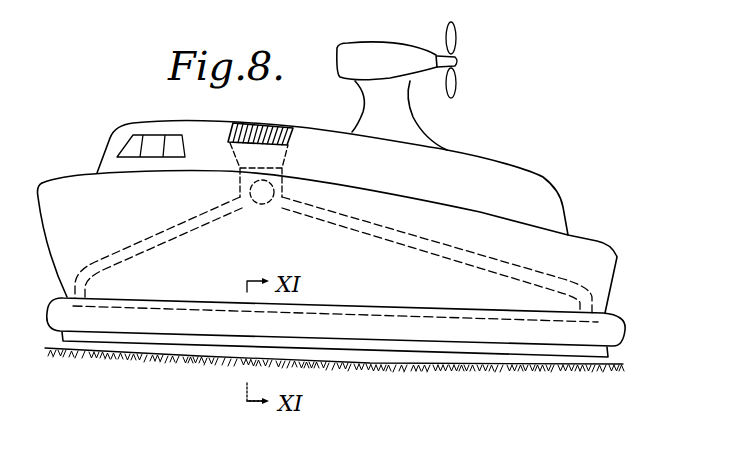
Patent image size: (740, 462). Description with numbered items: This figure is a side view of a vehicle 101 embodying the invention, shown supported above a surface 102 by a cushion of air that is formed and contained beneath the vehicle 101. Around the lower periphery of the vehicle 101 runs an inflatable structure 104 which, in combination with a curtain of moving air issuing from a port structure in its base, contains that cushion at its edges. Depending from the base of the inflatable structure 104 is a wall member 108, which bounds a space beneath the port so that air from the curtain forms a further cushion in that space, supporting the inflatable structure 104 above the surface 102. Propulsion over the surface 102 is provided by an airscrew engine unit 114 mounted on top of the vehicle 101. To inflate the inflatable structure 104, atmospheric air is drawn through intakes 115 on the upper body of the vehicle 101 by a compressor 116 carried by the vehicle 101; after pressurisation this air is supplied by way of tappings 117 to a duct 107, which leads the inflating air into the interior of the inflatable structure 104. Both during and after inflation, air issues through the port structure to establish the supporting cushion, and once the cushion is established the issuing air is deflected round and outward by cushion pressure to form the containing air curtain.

The vehicle 101 is at (575, 211).
The surface 102 is at (97, 352).
The inflatable structure 104 is at (598, 338).
The duct 107 is at (538, 316).
The wall member 108 is at (542, 351).
The airscrew engine unit 114 is at (390, 46).
The intakes 115 is at (286, 110).
The compressor 116 is at (287, 181).
The tappings 117 is at (388, 233).